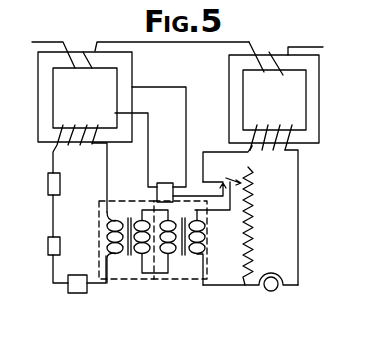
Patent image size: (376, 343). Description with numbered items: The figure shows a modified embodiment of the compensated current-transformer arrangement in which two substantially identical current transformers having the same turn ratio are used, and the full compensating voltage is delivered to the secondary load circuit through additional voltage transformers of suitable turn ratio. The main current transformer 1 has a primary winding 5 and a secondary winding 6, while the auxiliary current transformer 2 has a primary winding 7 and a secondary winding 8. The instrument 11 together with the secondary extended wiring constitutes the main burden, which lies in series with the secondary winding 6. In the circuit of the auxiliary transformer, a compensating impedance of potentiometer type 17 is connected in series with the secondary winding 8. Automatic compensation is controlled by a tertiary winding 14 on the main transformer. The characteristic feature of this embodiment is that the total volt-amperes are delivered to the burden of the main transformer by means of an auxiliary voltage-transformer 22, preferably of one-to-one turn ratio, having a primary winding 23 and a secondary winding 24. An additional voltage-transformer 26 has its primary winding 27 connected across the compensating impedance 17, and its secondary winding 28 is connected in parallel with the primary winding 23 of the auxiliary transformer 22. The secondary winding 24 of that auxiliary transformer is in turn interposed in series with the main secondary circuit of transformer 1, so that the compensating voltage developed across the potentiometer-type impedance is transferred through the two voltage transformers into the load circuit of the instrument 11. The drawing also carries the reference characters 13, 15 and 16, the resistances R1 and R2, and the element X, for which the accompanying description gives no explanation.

The main current transformer 1 is at (149, 70).
The auxiliary current transformer 2 is at (224, 70).
The primary winding of main current transformer 5 is at (140, 66).
The secondary winding of main current transformer 6 is at (80, 160).
The primary winding of auxiliary current transformer 7 is at (286, 67).
The secondary winding of auxiliary current transformer 8 is at (274, 198).
The instrument 11 is at (87, 274).
The relay 13 is at (212, 178).
The tertiary winding 14 is at (136, 114).
The rectifier unit 15 is at (165, 183).
The resistor 16 is at (251, 242).
The impedance of potentiometer type 17 is at (251, 177).
The auxiliary voltage-transformer 22 is at (147, 287).
The primary winding of auxiliary voltage-transformer 23 is at (138, 258).
The secondary winding of auxiliary voltage-transformer 24 is at (105, 224).
The additional voltage-transformer 26 is at (176, 282).
The primary winding of additional voltage-transformer 27 is at (210, 224).
The secondary winding of additional voltage-transformer 28 is at (168, 258).
The resistor R1 is at (44, 205).
The resistor R2 is at (47, 260).
The lamp X is at (250, 275).